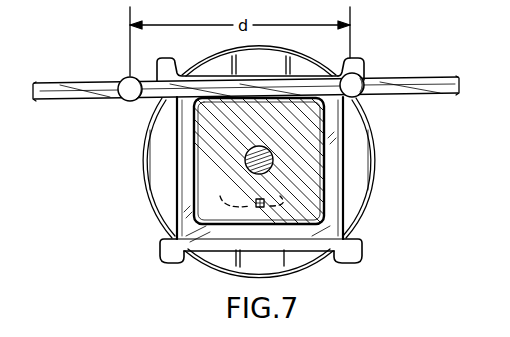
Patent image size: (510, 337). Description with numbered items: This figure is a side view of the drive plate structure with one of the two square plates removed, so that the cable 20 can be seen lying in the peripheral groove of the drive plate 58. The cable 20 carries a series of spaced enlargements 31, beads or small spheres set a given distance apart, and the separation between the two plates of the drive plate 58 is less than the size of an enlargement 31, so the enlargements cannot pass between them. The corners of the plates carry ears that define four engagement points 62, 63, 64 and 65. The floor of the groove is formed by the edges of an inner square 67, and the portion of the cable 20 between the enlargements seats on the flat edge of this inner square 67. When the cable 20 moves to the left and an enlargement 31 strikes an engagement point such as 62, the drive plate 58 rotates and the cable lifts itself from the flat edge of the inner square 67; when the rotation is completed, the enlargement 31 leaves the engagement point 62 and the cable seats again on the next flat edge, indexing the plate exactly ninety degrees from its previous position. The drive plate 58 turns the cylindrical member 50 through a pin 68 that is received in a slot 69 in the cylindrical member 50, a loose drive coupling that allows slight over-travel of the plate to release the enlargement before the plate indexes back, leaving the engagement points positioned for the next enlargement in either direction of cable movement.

The cable 20 is at (264, 93).
The enlargement 31 is at (356, 97).
The cylindrical member 50 is at (145, 142).
The drive plate 58 is at (177, 170).
The engagement point 62 is at (358, 76).
The engagement point 63 is at (345, 263).
The engagement point 64 is at (165, 243).
The engagement point 65 is at (177, 73).
The inner square 67 is at (213, 228).
The pin 68 is at (265, 200).
The slot 69 is at (246, 192).